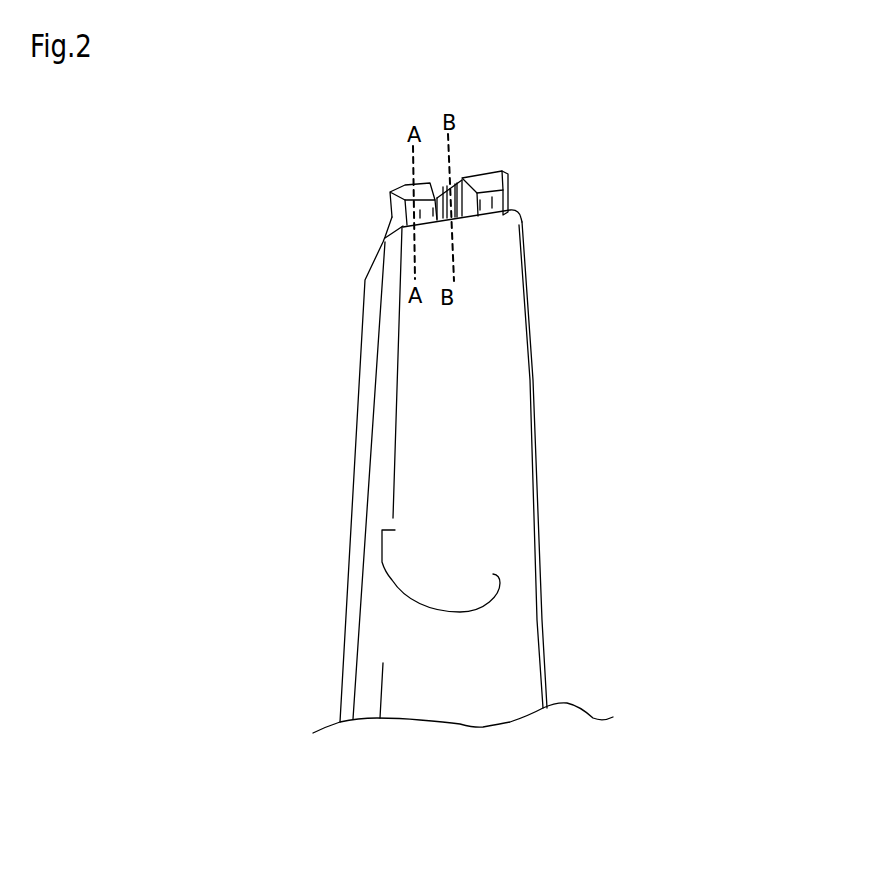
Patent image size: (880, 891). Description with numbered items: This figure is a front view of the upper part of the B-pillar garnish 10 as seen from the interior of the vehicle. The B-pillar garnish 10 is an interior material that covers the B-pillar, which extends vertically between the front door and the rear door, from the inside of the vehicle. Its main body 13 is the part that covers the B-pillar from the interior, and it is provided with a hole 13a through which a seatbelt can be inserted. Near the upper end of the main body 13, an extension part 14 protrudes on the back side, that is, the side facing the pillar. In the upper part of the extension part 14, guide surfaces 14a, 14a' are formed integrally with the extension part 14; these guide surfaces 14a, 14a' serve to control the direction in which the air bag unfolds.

The B-pillar garnish 10 is at (557, 362).
The main body 13 is at (518, 535).
The hole 13a is at (390, 572).
The extension part 14 is at (507, 185).
The guide surface 14a is at (500, 169).
The guide surface 14a' is at (382, 184).